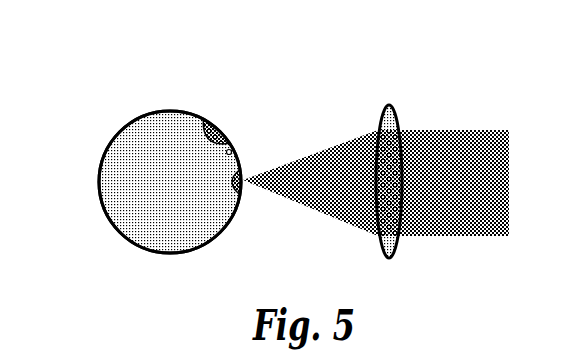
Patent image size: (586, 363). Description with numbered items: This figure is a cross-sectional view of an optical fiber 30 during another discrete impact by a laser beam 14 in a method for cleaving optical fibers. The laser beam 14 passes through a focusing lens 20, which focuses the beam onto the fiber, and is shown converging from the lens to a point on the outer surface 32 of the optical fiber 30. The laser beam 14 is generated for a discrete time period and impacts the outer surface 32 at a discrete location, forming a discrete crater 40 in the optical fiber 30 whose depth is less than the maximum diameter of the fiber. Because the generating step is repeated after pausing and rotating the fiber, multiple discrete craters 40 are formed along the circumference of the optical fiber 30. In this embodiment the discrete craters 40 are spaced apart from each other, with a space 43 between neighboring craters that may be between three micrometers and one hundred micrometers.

The laser beam 14 is at (301, 157).
The focusing lens 20 is at (399, 111).
The optical fiber 30 is at (112, 132).
The outer surface 32 is at (171, 111).
The discrete crater 40 is at (215, 127).
The space 43 is at (231, 150).